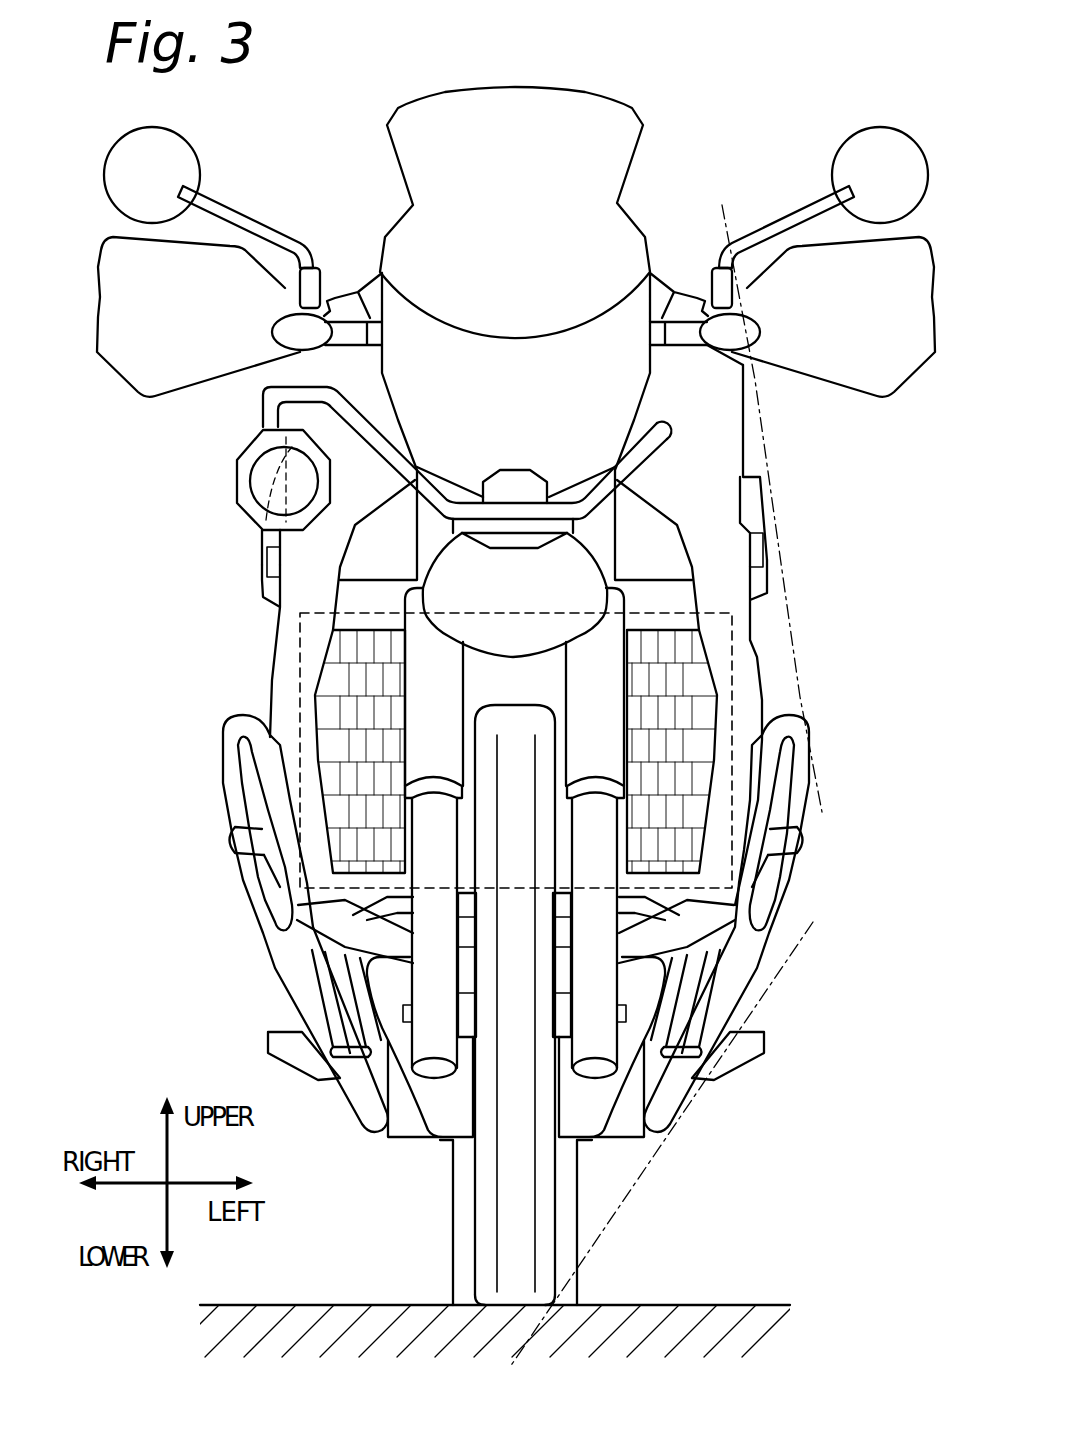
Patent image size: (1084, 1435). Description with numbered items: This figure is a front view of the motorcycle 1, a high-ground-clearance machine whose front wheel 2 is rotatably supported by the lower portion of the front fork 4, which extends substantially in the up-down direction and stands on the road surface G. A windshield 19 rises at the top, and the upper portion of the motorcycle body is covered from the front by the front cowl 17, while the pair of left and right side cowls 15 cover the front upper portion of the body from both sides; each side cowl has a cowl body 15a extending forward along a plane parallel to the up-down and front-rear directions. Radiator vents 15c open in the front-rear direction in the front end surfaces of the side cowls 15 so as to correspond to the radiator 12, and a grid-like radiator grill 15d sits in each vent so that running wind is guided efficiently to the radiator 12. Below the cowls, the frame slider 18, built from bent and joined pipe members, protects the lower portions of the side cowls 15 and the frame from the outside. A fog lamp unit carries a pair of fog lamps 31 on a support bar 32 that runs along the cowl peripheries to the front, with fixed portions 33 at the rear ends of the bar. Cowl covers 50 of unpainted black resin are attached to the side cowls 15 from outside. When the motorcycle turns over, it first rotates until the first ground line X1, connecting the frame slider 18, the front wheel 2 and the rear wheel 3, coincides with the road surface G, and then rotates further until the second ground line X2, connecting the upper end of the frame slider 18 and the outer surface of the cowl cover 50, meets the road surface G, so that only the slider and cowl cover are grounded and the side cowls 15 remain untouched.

The motorcycle 1 is at (684, 196).
The front wheel 2 is at (548, 1238).
The rear wheel 3 is at (456, 1263).
The front fork 4 is at (433, 1070).
The radiator 12 is at (740, 673).
The side cowl 15 is at (737, 783).
The cowl body 15a is at (765, 698).
The radiator vent 15c is at (333, 665).
The radiator grill 15d is at (330, 713).
The front cowl 17 is at (445, 1112).
The frame slider 18 is at (247, 890).
The windshield 19 is at (526, 225).
The fog lamp 31 is at (237, 482).
The support bar 32 is at (263, 415).
The fixed portion 33 is at (262, 578).
The cowl cover 50 is at (262, 550).
The road surface G is at (719, 1304).
The first ground line X1 is at (813, 925).
The second ground line X2 is at (822, 812).